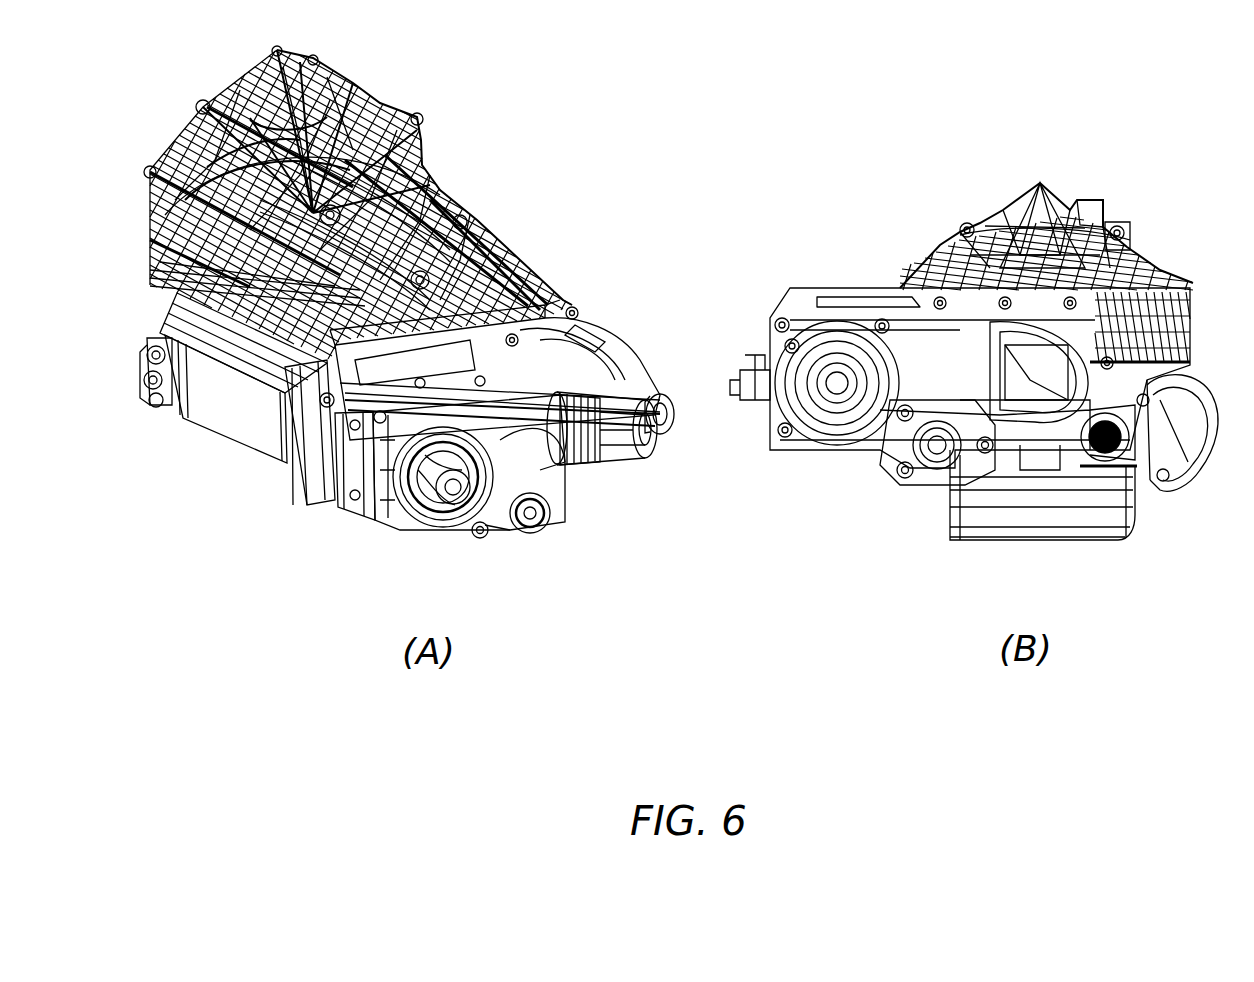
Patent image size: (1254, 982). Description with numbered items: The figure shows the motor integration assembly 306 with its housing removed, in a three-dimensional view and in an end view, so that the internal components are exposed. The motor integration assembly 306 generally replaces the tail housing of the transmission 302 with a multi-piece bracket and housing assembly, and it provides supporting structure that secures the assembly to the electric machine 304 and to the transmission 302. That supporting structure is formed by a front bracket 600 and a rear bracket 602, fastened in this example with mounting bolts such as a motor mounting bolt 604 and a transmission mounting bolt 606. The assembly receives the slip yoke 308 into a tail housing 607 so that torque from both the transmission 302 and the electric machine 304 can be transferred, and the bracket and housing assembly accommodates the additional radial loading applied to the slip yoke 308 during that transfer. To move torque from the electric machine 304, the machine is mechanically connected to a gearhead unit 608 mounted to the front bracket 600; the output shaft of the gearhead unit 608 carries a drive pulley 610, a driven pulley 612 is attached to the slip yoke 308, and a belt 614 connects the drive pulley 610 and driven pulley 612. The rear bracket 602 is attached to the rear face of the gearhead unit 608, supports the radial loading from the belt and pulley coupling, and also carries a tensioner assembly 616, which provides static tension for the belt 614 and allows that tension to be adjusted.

The transmission 302 is at (440, 205).
The electric machine 304 is at (217, 416).
The motor integration assembly 306 is at (653, 545).
The slip yoke 308 is at (668, 398).
The front bracket 600 is at (755, 378).
The rear bracket 602 is at (500, 452).
The motor mounting bolt 604 is at (327, 402).
The transmission mounting bolt 606 is at (571, 307).
The tail housing 607 is at (590, 330).
The gearhead unit 608 is at (355, 490).
The drive pulley 610 is at (432, 535).
The driven pulley 612 is at (570, 452).
The belt 614 is at (567, 378).
The tensioner assembly 616 is at (515, 533).